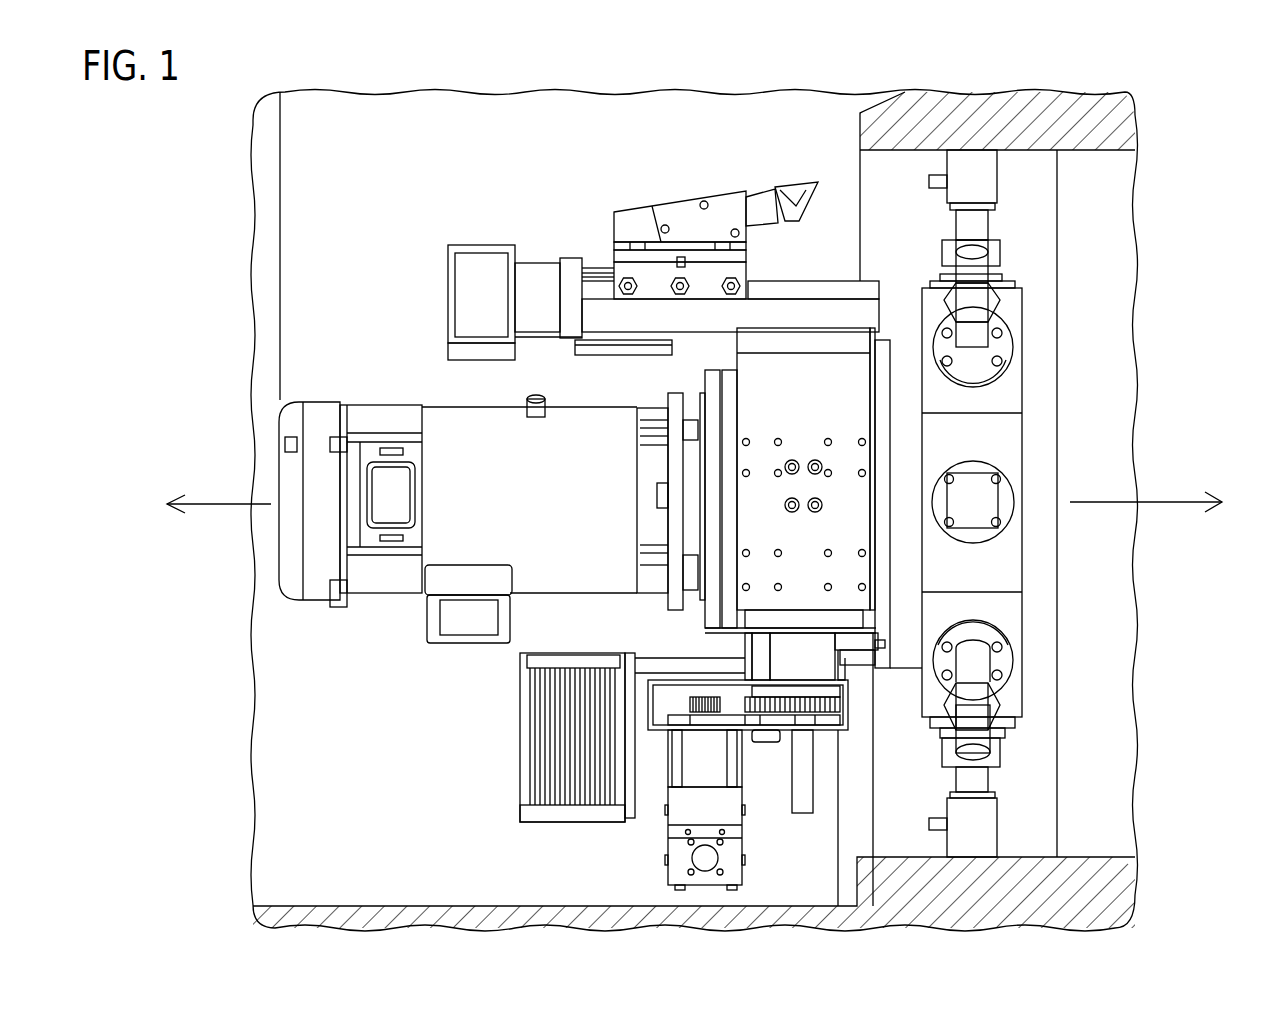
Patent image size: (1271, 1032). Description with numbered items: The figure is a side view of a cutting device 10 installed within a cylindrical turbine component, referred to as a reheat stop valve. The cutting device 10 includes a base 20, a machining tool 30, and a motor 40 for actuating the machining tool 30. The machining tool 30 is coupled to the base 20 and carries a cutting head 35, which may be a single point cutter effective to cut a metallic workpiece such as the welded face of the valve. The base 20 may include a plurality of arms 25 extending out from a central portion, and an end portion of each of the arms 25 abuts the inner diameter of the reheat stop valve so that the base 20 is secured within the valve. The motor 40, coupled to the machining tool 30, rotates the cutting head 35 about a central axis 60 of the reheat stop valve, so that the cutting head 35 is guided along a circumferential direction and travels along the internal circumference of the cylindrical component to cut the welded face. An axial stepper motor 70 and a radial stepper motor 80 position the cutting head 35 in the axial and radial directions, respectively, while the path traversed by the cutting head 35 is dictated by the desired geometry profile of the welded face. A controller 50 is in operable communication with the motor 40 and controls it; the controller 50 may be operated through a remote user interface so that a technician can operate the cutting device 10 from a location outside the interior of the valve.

The cutting device 10 is at (1024, 60).
The base 20 is at (1000, 395).
The arms 25 is at (975, 665).
The machining tool 30 is at (815, 397).
The cutting head 35 is at (797, 215).
The motor 40 is at (572, 573).
The controller 50 is at (540, 740).
The central axis 60 is at (1176, 502).
The axial stepper motor 70 is at (538, 283).
The radial stepper motor 80 is at (720, 810).